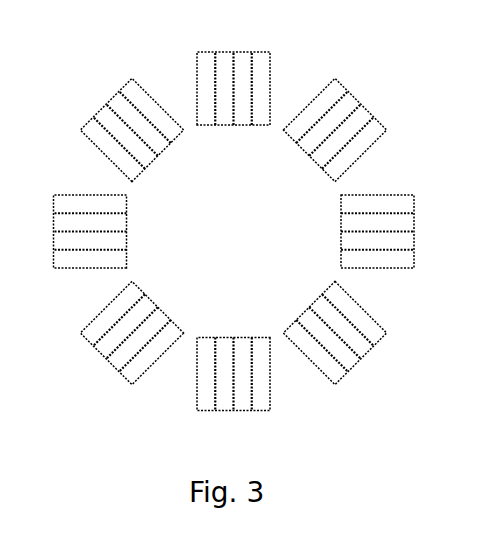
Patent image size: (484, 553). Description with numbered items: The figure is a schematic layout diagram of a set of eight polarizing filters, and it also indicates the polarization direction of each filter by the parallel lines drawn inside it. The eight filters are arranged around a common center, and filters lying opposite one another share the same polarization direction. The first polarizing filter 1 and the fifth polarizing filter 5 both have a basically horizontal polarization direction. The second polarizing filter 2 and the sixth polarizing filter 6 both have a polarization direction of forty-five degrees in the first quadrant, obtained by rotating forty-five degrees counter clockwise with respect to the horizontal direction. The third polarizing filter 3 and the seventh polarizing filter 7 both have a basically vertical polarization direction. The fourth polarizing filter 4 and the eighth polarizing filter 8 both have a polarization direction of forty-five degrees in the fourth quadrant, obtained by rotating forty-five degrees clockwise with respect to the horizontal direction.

The first polarizing filter 1 is at (393, 231).
The second polarizing filter 2 is at (335, 128).
The third polarizing filter 3 is at (233, 66).
The fourth polarizing filter 4 is at (131, 126).
The fifth polarizing filter 5 is at (73, 231).
The sixth polarizing filter 6 is at (130, 333).
The seventh polarizing filter 7 is at (233, 393).
The eighth polarizing filter 8 is at (339, 333).